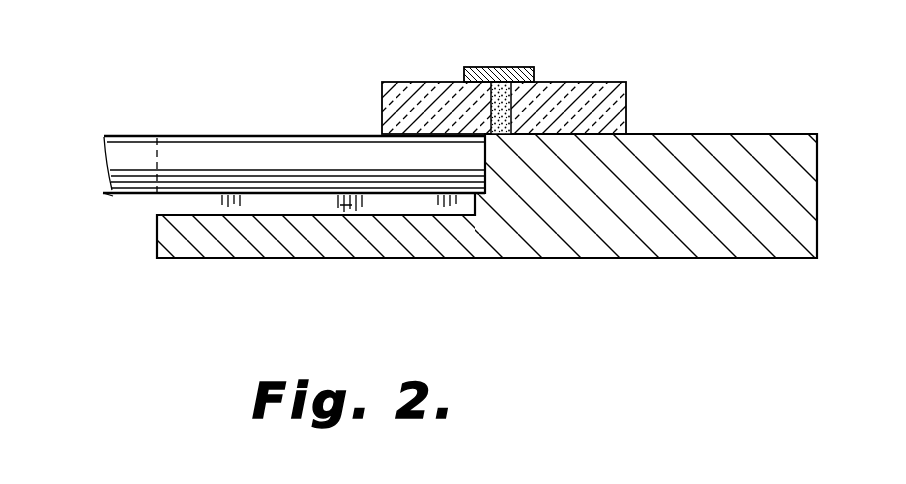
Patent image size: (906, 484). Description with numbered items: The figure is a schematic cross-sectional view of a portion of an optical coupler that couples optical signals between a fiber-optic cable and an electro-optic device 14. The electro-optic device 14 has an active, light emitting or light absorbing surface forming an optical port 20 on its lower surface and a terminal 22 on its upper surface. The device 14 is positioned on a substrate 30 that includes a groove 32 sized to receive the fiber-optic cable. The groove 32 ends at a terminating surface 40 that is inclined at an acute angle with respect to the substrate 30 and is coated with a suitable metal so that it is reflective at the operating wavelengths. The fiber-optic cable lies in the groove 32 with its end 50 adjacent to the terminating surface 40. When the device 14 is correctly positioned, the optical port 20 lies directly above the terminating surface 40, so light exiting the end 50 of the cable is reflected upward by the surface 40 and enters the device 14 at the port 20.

The electro-optic device 14 is at (378, 108).
The terminal 22 is at (513, 65).
The optical port 20 is at (487, 146).
The substrate 30 is at (763, 247).
The groove 32 is at (190, 198).
The terminating surface 40 is at (477, 199).
The end of fiber-optic cable 50 is at (500, 139).